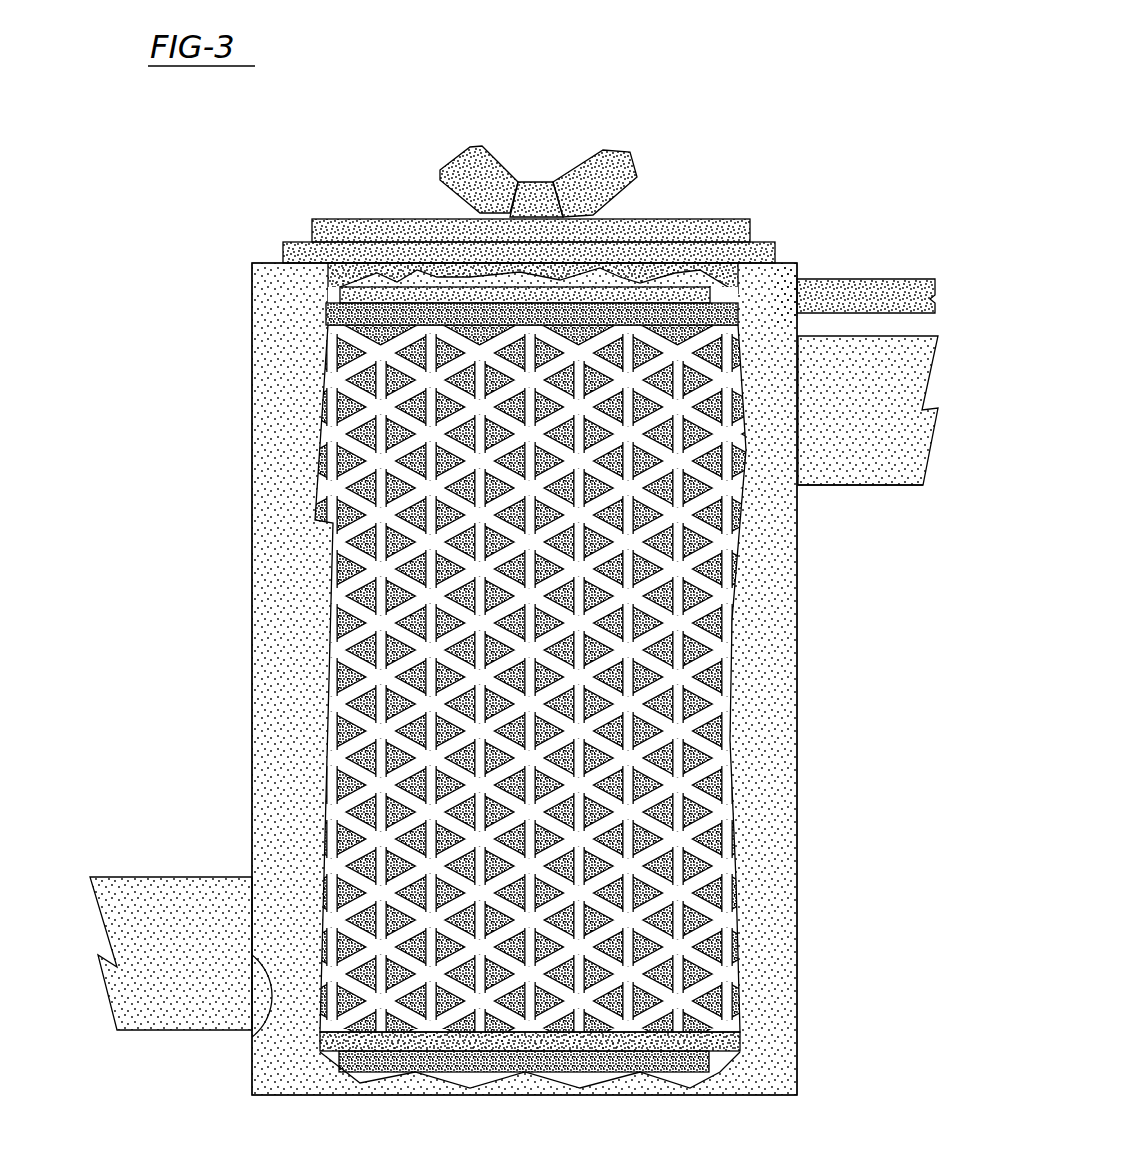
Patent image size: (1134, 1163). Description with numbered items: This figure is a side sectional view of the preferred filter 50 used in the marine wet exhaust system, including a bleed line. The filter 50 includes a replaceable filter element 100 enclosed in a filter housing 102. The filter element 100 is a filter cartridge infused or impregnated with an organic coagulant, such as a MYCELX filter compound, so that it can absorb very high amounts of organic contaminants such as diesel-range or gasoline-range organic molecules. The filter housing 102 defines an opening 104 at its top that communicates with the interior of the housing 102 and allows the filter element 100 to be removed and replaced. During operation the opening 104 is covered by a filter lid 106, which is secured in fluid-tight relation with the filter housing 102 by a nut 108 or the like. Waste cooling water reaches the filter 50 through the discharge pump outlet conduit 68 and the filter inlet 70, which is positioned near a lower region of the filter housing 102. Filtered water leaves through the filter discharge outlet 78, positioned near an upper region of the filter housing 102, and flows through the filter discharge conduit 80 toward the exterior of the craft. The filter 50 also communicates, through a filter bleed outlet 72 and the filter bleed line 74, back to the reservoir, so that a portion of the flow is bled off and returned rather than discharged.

The filter 50 is at (562, 600).
The filter lid 106 is at (408, 222).
The nut 108 is at (587, 182).
The opening 104 is at (699, 282).
The filter housing 102 is at (762, 290).
The filter bleed outlet 72 is at (783, 292).
The filter bleed line 74 is at (850, 290).
The filter discharge outlet 78 is at (800, 395).
The filter discharge conduit 80 is at (865, 487).
The filter element 100 is at (743, 562).
The discharge pump outlet conduit 68 is at (182, 885).
The filter inlet 70 is at (247, 1032).